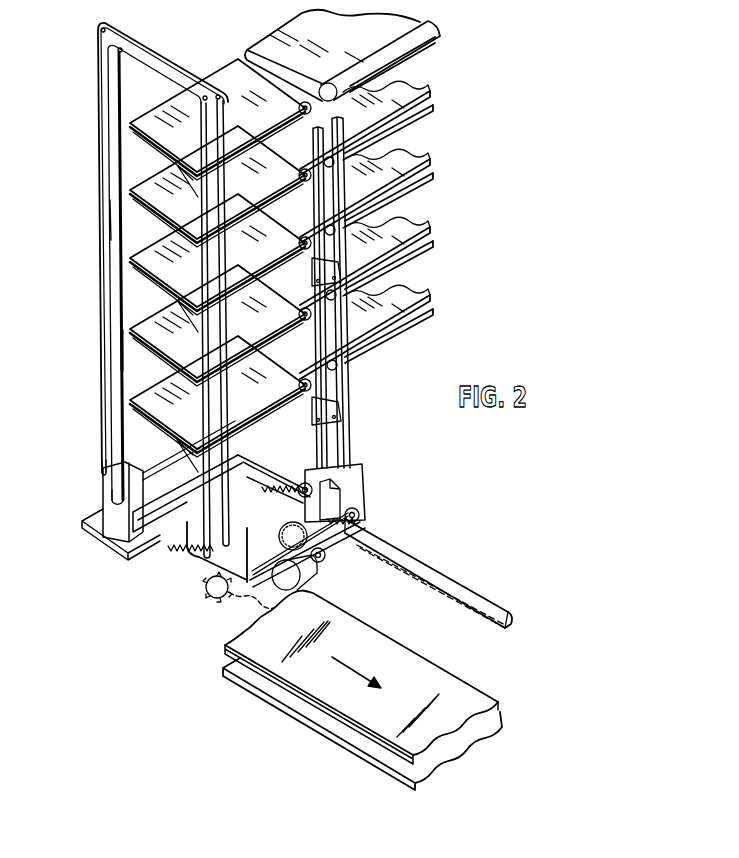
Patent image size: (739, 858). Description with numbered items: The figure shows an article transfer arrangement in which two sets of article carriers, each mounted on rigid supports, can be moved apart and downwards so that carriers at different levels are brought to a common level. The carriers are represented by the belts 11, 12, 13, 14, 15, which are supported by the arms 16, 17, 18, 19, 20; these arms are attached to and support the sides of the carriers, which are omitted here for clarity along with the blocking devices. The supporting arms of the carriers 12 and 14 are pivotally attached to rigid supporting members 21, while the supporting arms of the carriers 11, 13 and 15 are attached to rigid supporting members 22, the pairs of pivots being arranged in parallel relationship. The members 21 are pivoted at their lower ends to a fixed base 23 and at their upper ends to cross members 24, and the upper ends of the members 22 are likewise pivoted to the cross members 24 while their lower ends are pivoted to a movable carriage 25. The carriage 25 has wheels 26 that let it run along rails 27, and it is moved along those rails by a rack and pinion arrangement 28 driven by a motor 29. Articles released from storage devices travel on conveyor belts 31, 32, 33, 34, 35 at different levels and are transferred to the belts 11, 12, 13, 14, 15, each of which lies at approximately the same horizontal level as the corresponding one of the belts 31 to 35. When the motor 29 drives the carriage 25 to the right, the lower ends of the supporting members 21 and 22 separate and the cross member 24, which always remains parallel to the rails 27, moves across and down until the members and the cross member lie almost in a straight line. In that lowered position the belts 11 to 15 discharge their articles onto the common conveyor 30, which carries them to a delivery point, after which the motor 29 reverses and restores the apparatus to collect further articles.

The belt 11 is at (154, 112).
The belt 12 is at (162, 177).
The belt 13 is at (166, 246).
The belt 14 is at (161, 317).
The belt 15 is at (162, 387).
The arm 16 is at (193, 187).
The arm 17 is at (125, 212).
The arm 18 is at (197, 325).
The arm 19 is at (133, 352).
The arm 20 is at (183, 447).
The rigid supporting member 21 is at (120, 464).
The rigid supporting member 22 is at (226, 507).
The fixed base 23 is at (108, 507).
The cross member 24 is at (157, 49).
The movable carriage 25 is at (217, 558).
The wheel 26 is at (359, 514).
The rail 27 is at (392, 543).
The rack and pinion arrangement 28 is at (210, 597).
The motor 29 is at (313, 570).
The common conveyor 30 is at (243, 672).
The conveyor belt 31 is at (397, 50).
The conveyor belt 32 is at (425, 113).
The conveyor belt 33 is at (422, 160).
The conveyor belt 34 is at (420, 235).
The conveyor belt 35 is at (422, 298).